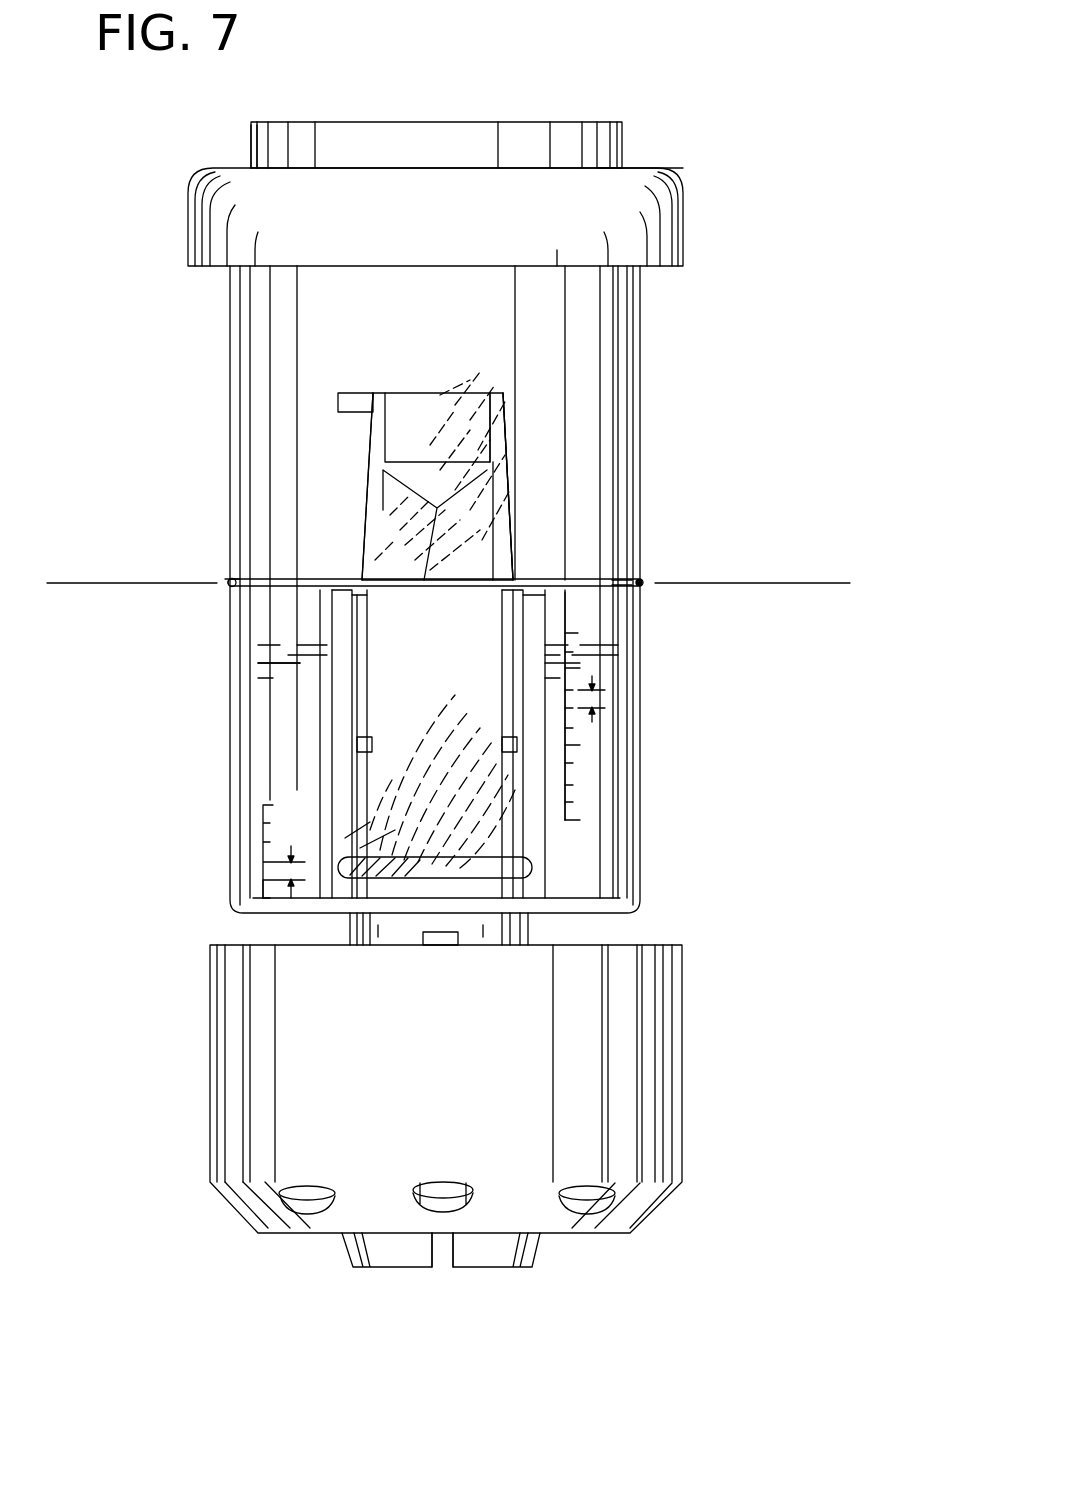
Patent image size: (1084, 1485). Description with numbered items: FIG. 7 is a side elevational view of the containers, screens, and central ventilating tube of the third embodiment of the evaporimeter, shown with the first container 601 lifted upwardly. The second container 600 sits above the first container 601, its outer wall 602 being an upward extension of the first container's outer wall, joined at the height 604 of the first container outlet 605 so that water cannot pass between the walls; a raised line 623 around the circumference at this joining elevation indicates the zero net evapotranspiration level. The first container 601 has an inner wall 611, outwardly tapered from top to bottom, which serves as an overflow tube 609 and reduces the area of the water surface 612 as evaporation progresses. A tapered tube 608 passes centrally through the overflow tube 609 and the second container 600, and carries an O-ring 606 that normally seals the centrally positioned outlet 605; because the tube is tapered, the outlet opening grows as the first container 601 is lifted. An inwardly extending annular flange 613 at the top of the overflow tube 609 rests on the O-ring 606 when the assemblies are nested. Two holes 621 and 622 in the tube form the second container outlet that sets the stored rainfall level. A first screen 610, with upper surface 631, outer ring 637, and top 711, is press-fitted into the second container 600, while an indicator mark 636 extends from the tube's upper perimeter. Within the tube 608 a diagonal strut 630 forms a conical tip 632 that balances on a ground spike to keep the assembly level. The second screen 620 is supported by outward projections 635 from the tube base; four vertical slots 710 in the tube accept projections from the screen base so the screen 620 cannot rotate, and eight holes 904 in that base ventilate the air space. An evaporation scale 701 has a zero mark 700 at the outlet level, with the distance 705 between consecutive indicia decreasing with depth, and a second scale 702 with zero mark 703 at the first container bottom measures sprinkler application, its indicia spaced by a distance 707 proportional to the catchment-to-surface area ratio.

The second container 600 is at (642, 372).
The first container 601 is at (642, 850).
The outer wall of the second container 602 is at (641, 330).
The height of the first container outlet 604 is at (812, 576).
The first container outlet 605 is at (517, 580).
The O-ring 606 is at (483, 880).
The tapered tube 608 is at (510, 442).
The overflow tube 609 is at (347, 627).
The first screen 610 is at (186, 235).
The inner wall of the first container 611 is at (327, 672).
The water surface 612 is at (273, 643).
The annular flange 613 is at (348, 580).
The second screen 620 is at (210, 1030).
The hole 621 is at (357, 745).
The hole 622 is at (517, 745).
The raised line 623 is at (232, 580).
The diagonal strut 630 is at (420, 462).
The upper surface of the first screen 631 is at (648, 168).
The conical tip 632 is at (424, 590).
The outward projections 635 is at (347, 1248).
The indicator mark 636 is at (338, 402).
The outer ring 637 is at (251, 148).
The zero mark 700 is at (606, 579).
The evaporation scale 701 is at (567, 618).
The second scale 702 is at (278, 805).
The zero mark of the second scale 703 is at (268, 898).
The distance between consecutive indicia 705 is at (597, 700).
The distance between indicia on the second scale 707 is at (312, 872).
The vertical slots 710 is at (447, 1258).
The top of the first screen 711 is at (418, 121).
The holes 904 is at (588, 1195).